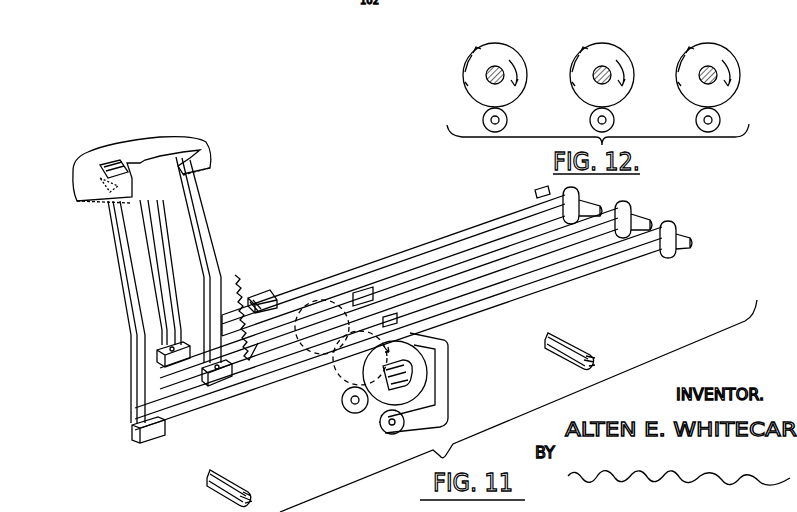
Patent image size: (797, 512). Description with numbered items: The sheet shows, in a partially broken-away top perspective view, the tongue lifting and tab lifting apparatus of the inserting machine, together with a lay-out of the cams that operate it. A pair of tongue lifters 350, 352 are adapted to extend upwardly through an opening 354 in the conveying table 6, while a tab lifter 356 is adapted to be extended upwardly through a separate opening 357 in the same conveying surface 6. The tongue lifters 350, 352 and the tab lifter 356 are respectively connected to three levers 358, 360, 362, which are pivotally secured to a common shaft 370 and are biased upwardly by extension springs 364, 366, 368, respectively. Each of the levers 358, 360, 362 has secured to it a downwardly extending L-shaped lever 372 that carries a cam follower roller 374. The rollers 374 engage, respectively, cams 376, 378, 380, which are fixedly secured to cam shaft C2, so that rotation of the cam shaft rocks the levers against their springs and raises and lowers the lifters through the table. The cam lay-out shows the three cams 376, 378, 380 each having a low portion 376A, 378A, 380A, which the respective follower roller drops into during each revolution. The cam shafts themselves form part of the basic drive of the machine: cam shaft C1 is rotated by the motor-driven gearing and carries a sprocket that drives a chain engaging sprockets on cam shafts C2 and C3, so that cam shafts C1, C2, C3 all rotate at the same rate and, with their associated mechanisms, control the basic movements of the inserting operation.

In FIG. 11, the conveying table 6 is at (92, 161).
In FIG. 11, the tongue lifter 350 is at (147, 163).
In FIG. 11, the tongue lifter 352 is at (172, 158).
In FIG. 11, the opening 354 is at (108, 162).
In FIG. 11, the tab lifter 356 is at (100, 183).
In FIG. 11, the opening 357 is at (105, 165).
In FIG. 11, the lever 358 is at (397, 262).
In FIG. 11, the lever 360 is at (548, 250).
In FIG. 11, the lever 362 is at (505, 302).
In FIG. 11, the extension spring 364 is at (243, 276).
In FIG. 11, the extension spring 366 is at (296, 286).
In FIG. 11, the extension spring 368 is at (280, 360).
In FIG. 11, the shaft 370 is at (595, 212).
In FIG. 11, the L-shaped lever 372 is at (440, 383).
In FIG. 11, the cam follower roller 374 is at (385, 424).
In FIG. 12, the cam 376 is at (500, 50).
In FIG. 11, the cam 376 is at (325, 305).
In FIG. 12, the low portion 376A is at (469, 66).
In FIG. 12, the cam 378 is at (615, 52).
In FIG. 11, the cam 378 is at (338, 382).
In FIG. 12, the low portion 378A is at (576, 62).
In FIG. 12, the cam 380 is at (715, 52).
In FIG. 11, the cam 380 is at (342, 402).
In FIG. 12, the low portion 380A is at (684, 90).
In FIG. 11, the cam shaft C1 is at (206, 480).
In FIG. 11, the cam shaft C2 is at (380, 378).
In FIG. 11, the cam shaft C3 is at (572, 350).